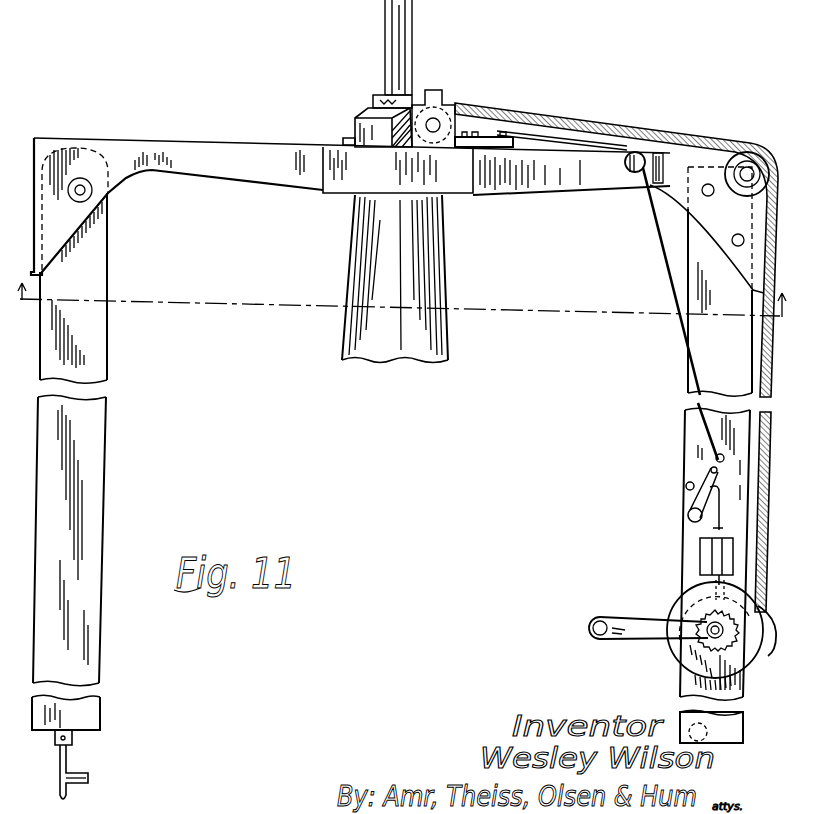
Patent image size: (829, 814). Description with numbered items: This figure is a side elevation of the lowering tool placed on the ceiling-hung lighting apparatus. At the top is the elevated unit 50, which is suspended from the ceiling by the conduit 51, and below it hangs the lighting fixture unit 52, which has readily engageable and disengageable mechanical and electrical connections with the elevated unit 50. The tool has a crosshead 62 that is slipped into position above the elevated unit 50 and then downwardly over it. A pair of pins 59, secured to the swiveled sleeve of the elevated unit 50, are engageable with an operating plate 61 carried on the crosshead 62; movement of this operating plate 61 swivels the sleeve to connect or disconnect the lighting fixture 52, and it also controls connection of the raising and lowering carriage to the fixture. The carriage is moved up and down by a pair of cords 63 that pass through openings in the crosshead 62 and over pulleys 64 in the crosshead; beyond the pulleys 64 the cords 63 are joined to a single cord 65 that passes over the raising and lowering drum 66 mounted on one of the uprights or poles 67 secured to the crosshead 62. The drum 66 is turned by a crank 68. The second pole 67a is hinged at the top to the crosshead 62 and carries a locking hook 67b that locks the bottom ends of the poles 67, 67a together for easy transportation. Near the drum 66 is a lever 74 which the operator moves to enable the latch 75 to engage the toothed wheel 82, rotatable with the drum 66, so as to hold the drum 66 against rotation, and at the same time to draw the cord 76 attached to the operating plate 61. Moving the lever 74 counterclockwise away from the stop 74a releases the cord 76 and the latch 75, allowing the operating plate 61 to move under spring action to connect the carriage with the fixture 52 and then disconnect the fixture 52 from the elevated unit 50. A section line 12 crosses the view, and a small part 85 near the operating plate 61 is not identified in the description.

The section line 12- 12 is at (399, 309).
The elevated unit 50 is at (351, 108).
The conduit 51 is at (410, 26).
The lighting fixture unit 52 is at (459, 254).
The pins 59 is at (348, 140).
The operating plate 61 is at (522, 142).
The crosshead 62 is at (251, 140).
The cords 63 is at (637, 126).
The pulleys 64 is at (447, 103).
The single cord 65 is at (770, 634).
The raising and lowering drum 66 is at (686, 655).
The uprights or poles 67 is at (693, 463).
The hinged pole 67a is at (105, 485).
The locking hook 67b is at (90, 778).
The crank 68 is at (627, 625).
The lever 74 is at (703, 497).
The stop 74a is at (685, 486).
The latch 75 is at (700, 592).
The cord 76 is at (660, 252).
The toothed wheel 82 is at (697, 622).
The clamp 85 is at (493, 143).